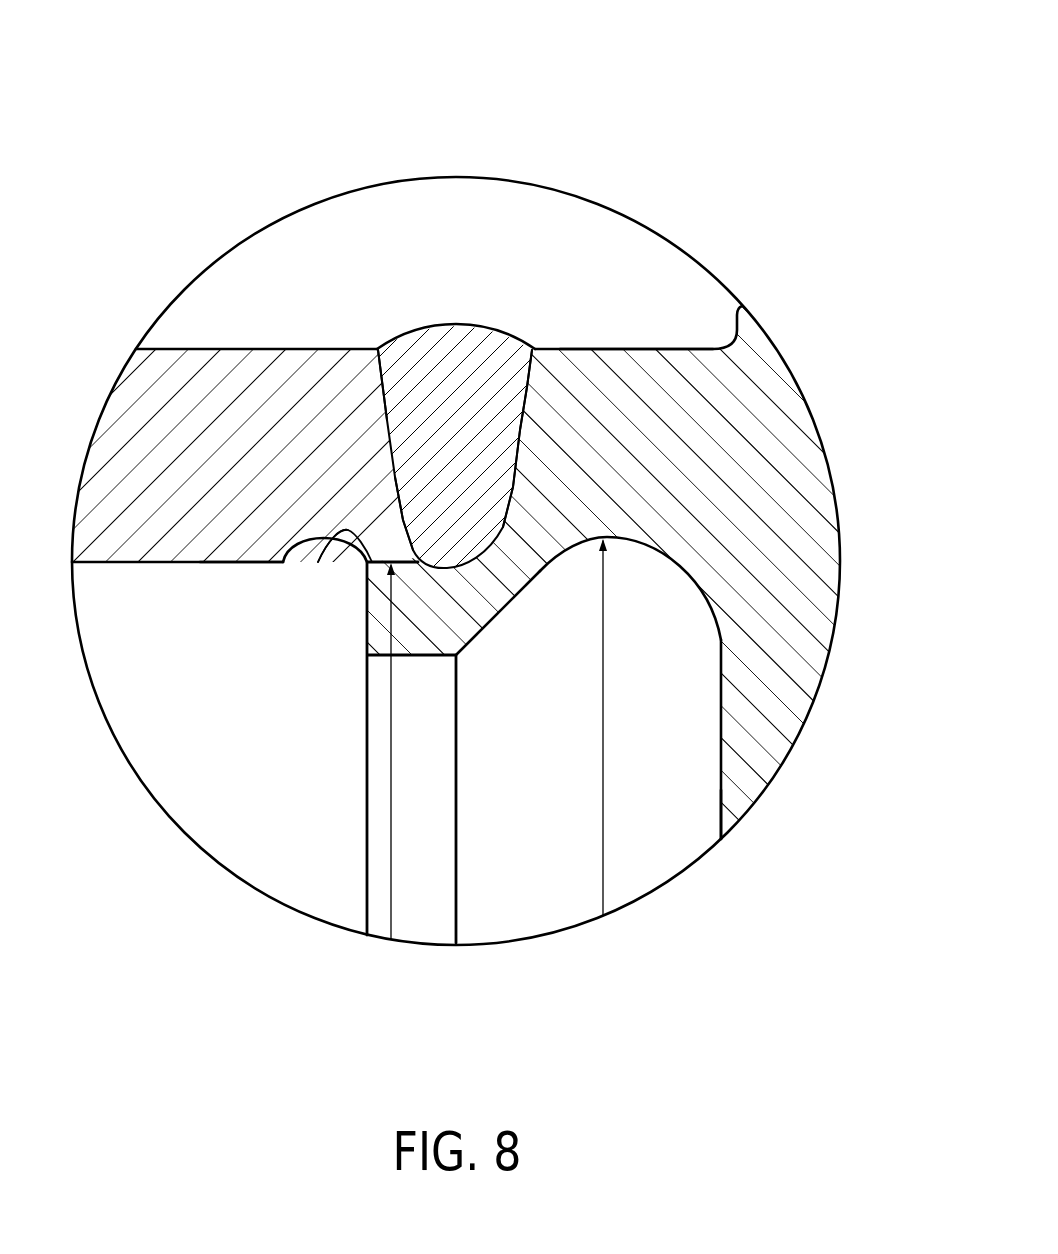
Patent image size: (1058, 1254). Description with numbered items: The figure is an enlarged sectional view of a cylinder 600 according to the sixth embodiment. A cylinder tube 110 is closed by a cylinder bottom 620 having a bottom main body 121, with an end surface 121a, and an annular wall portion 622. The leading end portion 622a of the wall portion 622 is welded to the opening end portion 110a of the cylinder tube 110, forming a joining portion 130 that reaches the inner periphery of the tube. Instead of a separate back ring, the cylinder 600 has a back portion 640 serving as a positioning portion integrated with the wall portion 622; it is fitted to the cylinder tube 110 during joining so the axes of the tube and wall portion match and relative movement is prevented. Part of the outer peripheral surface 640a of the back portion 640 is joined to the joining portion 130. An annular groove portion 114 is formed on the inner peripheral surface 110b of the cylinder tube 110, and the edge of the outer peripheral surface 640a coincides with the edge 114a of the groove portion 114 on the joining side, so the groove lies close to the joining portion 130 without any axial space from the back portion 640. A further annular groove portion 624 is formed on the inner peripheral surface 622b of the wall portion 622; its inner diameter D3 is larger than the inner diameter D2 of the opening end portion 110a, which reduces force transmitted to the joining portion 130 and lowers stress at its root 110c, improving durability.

The cylinder 600 is at (692, 284).
The cylinder tube 110 is at (192, 340).
The opening end portion 110a is at (386, 402).
The inner peripheral surface 110b is at (277, 562).
The root 110c is at (400, 547).
The joining portion 130 is at (445, 335).
The groove portion 114 is at (295, 565).
The edge 114a is at (349, 548).
The bottom main body 121 is at (750, 738).
The end surface 121a is at (721, 797).
The cylinder bottom 620 is at (703, 341).
The wall portion 622 is at (633, 383).
The leading end portion 622a is at (520, 390).
The inner peripheral surface 622b is at (545, 555).
The groove portion 624 is at (663, 553).
The back portion 640 is at (416, 648).
The outer peripheral surface 640a is at (320, 560).
The inner diameter D2 is at (392, 888).
The inner diameter D3 is at (602, 858).